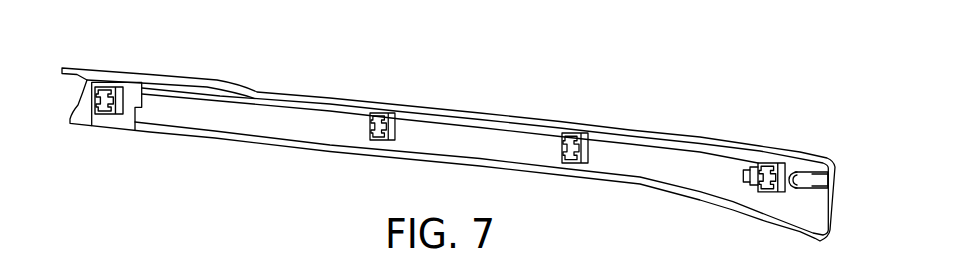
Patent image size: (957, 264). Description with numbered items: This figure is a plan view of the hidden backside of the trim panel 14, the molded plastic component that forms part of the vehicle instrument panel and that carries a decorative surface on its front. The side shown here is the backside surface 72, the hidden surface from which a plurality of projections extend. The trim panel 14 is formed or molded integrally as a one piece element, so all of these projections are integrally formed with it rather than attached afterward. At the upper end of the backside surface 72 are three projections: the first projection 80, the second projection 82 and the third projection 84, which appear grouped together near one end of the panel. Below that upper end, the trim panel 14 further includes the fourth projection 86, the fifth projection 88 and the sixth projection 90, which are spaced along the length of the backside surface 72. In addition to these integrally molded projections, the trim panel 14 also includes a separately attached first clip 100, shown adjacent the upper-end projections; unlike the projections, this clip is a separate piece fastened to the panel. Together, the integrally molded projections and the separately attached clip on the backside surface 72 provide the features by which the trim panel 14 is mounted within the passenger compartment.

The trim panel 14 is at (673, 131).
The backside surface 72 is at (487, 147).
The first projection 80 is at (798, 179).
The second projection 82 is at (769, 171).
The third projection 84 is at (744, 181).
The fourth projection 86 is at (566, 137).
The fifth projection 88 is at (371, 114).
The sixth projection 90 is at (103, 89).
The first clip 100 is at (818, 180).